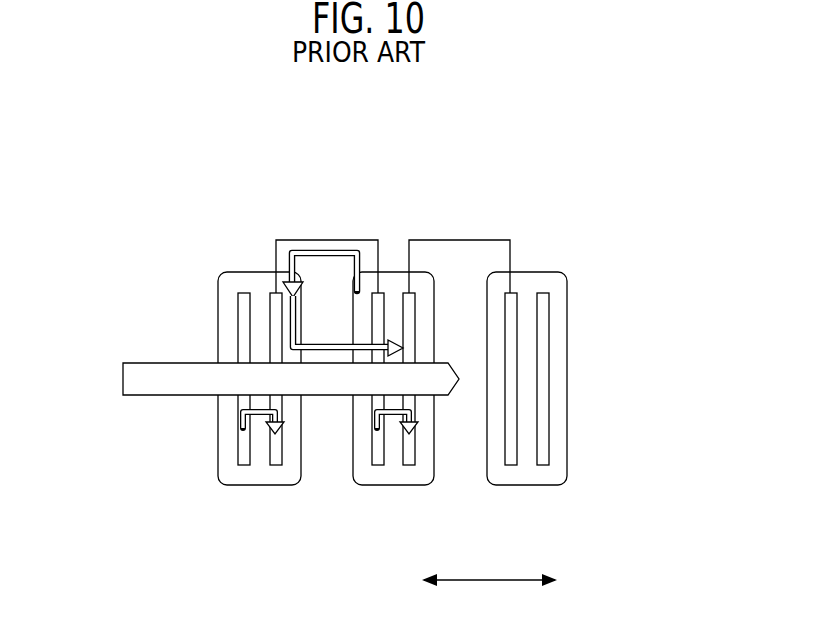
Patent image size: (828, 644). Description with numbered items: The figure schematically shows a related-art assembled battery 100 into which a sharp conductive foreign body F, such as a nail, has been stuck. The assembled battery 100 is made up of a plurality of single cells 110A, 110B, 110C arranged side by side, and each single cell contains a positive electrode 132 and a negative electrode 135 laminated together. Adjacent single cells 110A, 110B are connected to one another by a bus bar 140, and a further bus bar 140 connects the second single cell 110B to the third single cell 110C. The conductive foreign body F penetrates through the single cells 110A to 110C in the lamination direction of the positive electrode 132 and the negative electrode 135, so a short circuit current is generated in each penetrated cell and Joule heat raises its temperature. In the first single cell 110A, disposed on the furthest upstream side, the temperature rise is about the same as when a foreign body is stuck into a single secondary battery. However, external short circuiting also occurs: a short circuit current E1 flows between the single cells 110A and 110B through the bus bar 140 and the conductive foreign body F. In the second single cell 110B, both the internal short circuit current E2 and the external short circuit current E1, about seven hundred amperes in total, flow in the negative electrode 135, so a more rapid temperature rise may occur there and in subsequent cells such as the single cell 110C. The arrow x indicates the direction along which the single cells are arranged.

The assembled battery 100 is at (199, 234).
The first single cell 110A is at (212, 465).
The second single cell 110B is at (387, 492).
The third single cell 110C is at (573, 456).
The positive electrode 132 is at (245, 467).
The negative electrode 135 is at (275, 467).
The bus bar 140 is at (357, 239).
The short circuit current E1 is at (323, 250).
The short circuit current E2 is at (240, 422).
The conductive foreign body F is at (140, 362).
The module spacing direction x is at (489, 591).